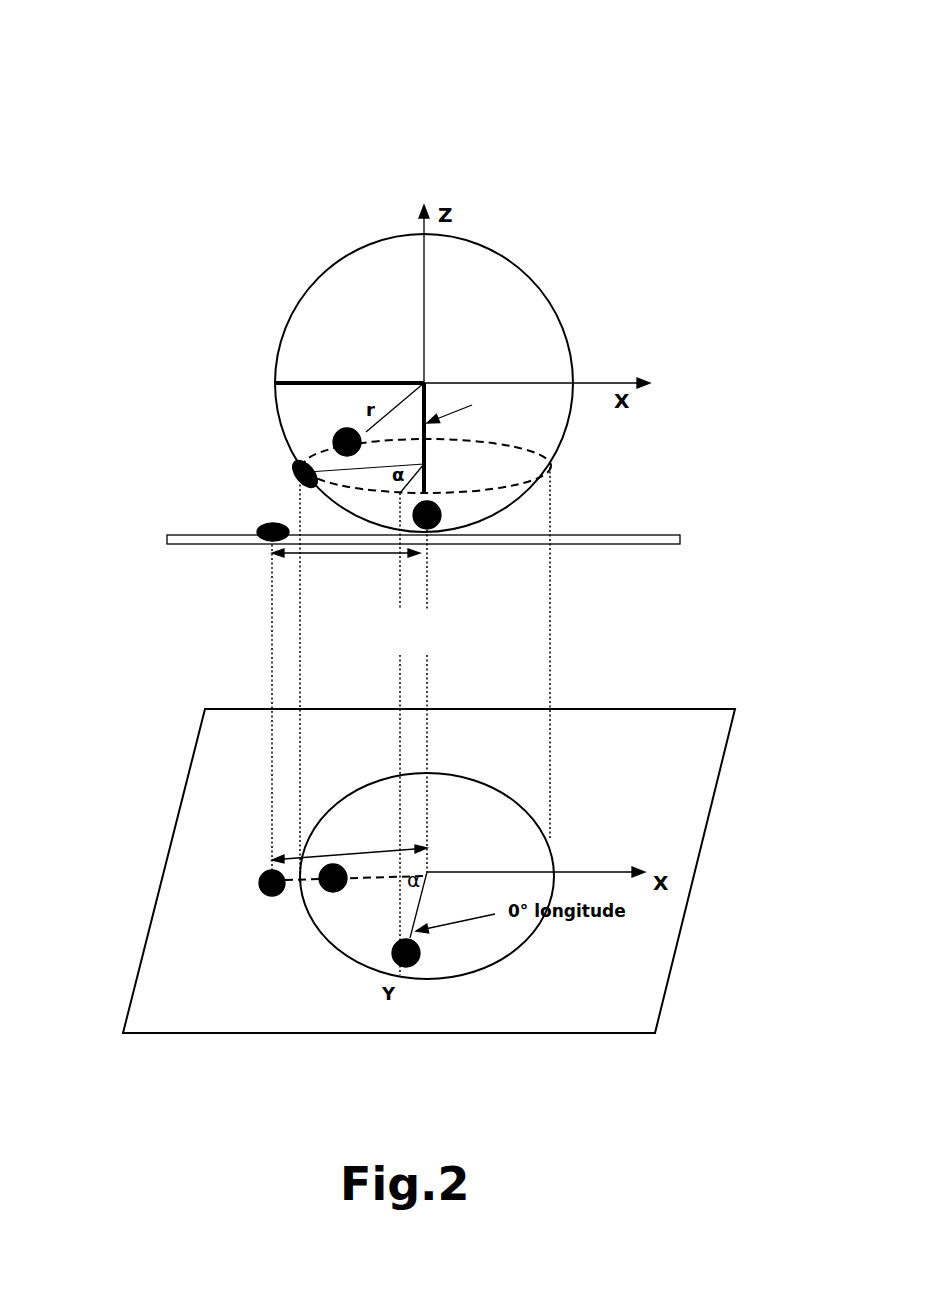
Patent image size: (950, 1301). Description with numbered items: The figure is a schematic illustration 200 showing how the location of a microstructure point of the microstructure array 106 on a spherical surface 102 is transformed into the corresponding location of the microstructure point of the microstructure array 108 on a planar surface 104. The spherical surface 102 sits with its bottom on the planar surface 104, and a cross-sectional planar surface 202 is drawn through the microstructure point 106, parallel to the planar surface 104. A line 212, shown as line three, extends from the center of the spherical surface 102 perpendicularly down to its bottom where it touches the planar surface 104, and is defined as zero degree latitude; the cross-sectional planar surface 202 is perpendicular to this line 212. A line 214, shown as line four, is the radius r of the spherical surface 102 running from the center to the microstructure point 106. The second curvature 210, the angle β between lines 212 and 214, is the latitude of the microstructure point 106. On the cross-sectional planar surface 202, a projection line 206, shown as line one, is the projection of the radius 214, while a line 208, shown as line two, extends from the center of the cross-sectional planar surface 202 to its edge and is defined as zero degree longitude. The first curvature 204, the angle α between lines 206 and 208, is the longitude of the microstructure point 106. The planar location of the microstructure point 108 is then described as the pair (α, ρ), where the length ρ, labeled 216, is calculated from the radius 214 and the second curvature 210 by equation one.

The schematic illustration 200 is at (103, 53).
The spherical surface 102 is at (525, 275).
The planar surface 104 is at (167, 540).
The microstructure point of the microstructure array on the spherical surface 106 is at (297, 466).
The microstructure point of the microstructure array on the planar surface 108 is at (270, 545).
The cross-sectional planar surface 202 is at (518, 487).
The first curvature 204 is at (400, 913).
The projection line 206 is at (335, 892).
The zero degree longitude line 208 is at (420, 953).
The second curvature 210 is at (403, 400).
The zero degree latitude line 212 is at (432, 530).
The radius 214 is at (337, 430).
The length ρ 216 is at (325, 548).